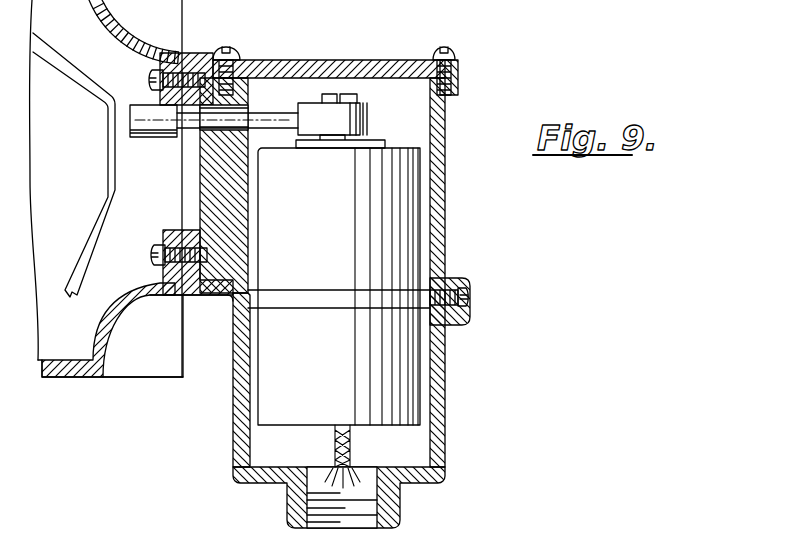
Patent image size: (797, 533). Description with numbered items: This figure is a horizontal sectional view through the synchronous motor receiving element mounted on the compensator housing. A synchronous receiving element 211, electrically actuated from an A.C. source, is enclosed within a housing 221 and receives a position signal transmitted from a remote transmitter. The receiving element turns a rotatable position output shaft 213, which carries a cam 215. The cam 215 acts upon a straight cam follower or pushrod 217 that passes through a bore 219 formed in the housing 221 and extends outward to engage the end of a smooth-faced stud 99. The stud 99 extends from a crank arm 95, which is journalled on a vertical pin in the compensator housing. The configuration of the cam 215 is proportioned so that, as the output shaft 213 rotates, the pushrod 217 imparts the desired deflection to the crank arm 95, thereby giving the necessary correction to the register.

The crank arm 95 is at (120, 214).
The smooth-faced stud 99 is at (153, 134).
The synchronous receiving element 211 is at (410, 237).
The rotatable position output shaft 213 is at (354, 100).
The cam 215 is at (365, 122).
The straight cam follower or pushrod 217 is at (274, 117).
The bore 219 is at (205, 132).
The housing 221 is at (233, 342).